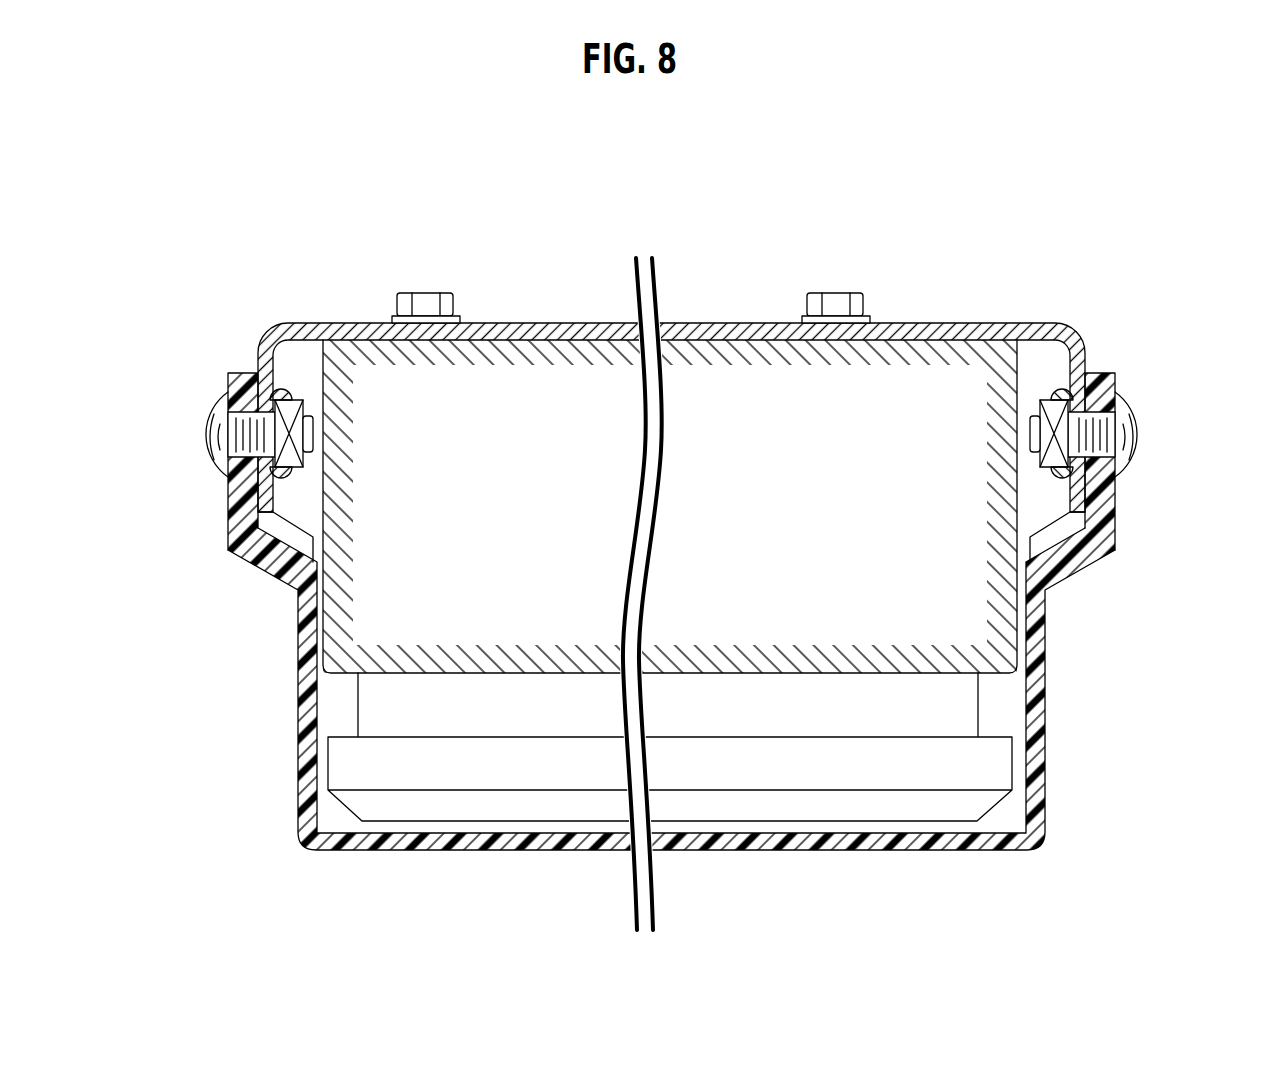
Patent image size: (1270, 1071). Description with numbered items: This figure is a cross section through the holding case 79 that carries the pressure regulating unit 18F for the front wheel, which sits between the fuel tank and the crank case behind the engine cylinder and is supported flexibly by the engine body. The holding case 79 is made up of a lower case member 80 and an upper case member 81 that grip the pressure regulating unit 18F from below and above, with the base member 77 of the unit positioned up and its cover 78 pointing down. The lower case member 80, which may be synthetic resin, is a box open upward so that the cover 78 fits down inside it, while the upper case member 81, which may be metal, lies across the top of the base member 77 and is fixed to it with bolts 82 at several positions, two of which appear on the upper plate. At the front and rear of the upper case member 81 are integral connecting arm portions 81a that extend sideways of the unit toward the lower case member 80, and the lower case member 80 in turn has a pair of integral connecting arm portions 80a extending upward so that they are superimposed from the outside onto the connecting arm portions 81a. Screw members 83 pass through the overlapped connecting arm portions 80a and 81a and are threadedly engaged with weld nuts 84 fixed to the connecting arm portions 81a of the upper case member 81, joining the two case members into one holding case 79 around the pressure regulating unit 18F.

The pressure regulating unit for the front wheel 18F is at (670, 587).
The base member 77 is at (760, 518).
The cover 78 is at (783, 708).
The holding case 79 is at (294, 670).
The lower case member 80 is at (782, 838).
The connecting arm portion of the lower case member 80a is at (234, 372).
The upper case member 81 is at (723, 327).
The connecting arm portion of the upper case member 81a is at (268, 508).
The bolt 82 is at (427, 302).
The screw member 83 is at (206, 443).
The weld nut 84 is at (290, 407).